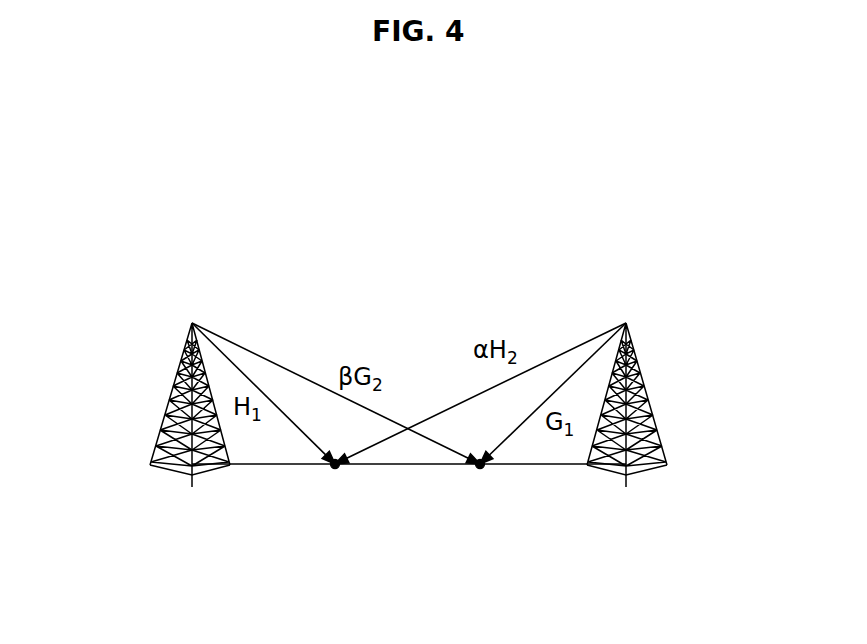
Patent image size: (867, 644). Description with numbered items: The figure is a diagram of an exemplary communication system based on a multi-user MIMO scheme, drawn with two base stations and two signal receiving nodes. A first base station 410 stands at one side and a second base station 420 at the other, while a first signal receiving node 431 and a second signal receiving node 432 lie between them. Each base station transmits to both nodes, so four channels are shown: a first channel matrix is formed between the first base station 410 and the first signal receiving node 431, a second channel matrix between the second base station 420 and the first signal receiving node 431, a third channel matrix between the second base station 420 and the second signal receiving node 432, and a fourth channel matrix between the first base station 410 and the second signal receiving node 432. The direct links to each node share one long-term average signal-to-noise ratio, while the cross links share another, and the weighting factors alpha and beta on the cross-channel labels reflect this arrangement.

The base station (1) 410 is at (186, 352).
The base station (2) 420 is at (640, 351).
The signal receiving node (1) 431 is at (335, 470).
The signal receiving node (2) 432 is at (480, 470).